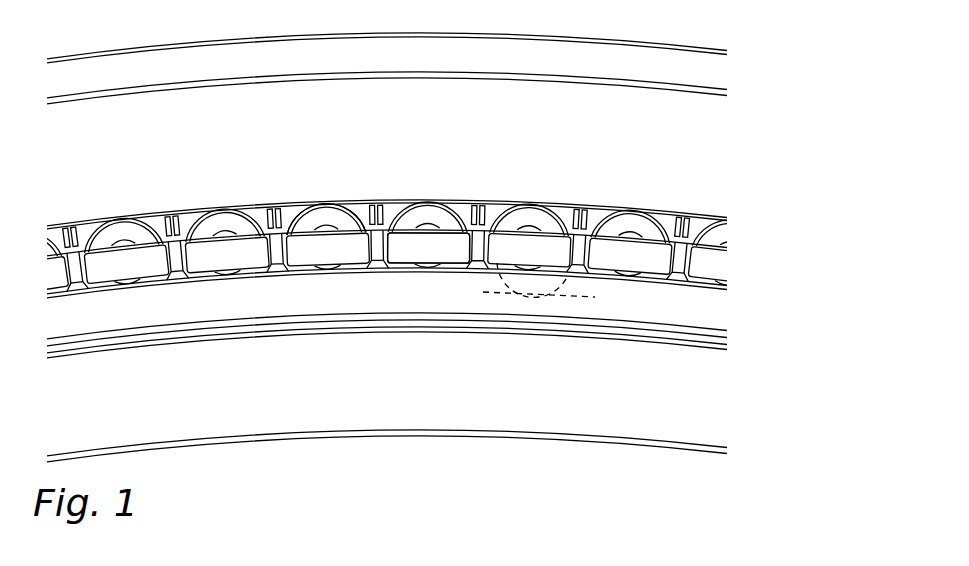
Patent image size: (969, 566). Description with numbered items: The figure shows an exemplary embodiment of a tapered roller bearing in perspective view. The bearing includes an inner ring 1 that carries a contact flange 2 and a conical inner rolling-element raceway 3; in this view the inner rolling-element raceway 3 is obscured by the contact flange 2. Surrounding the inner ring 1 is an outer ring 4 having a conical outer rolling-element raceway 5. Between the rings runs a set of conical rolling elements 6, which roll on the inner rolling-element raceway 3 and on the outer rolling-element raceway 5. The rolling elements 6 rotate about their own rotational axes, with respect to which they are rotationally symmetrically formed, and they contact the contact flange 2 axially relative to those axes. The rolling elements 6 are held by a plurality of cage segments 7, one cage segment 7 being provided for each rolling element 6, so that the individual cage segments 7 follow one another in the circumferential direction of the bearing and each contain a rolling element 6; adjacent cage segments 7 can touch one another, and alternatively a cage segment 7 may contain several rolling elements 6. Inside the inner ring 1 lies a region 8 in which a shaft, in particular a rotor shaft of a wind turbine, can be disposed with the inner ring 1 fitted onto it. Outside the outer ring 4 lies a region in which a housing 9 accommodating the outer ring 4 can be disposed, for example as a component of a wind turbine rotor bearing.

The inner ring 1 is at (737, 357).
The contact flange 2 is at (708, 316).
The inner rolling-element raceway 3 is at (573, 298).
The outer ring 4 is at (710, 148).
The outer rolling-element raceway 5 is at (497, 197).
The rolling elements 6 is at (357, 212).
The cage segments 7 is at (400, 255).
The shaft region 8 is at (700, 483).
The housing 9 is at (675, 31).